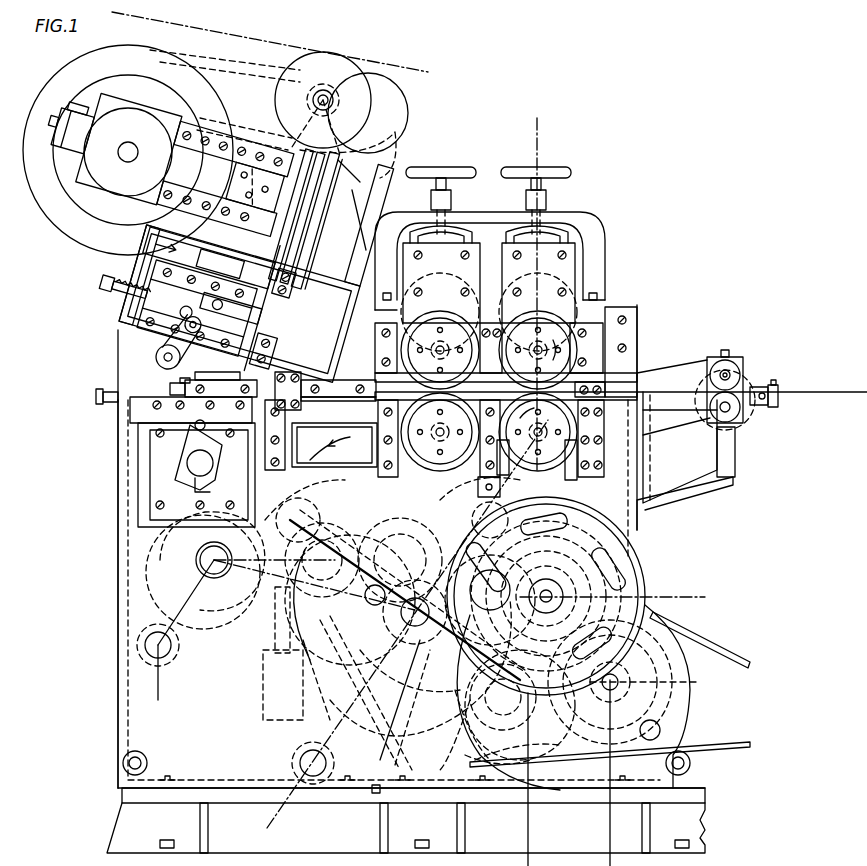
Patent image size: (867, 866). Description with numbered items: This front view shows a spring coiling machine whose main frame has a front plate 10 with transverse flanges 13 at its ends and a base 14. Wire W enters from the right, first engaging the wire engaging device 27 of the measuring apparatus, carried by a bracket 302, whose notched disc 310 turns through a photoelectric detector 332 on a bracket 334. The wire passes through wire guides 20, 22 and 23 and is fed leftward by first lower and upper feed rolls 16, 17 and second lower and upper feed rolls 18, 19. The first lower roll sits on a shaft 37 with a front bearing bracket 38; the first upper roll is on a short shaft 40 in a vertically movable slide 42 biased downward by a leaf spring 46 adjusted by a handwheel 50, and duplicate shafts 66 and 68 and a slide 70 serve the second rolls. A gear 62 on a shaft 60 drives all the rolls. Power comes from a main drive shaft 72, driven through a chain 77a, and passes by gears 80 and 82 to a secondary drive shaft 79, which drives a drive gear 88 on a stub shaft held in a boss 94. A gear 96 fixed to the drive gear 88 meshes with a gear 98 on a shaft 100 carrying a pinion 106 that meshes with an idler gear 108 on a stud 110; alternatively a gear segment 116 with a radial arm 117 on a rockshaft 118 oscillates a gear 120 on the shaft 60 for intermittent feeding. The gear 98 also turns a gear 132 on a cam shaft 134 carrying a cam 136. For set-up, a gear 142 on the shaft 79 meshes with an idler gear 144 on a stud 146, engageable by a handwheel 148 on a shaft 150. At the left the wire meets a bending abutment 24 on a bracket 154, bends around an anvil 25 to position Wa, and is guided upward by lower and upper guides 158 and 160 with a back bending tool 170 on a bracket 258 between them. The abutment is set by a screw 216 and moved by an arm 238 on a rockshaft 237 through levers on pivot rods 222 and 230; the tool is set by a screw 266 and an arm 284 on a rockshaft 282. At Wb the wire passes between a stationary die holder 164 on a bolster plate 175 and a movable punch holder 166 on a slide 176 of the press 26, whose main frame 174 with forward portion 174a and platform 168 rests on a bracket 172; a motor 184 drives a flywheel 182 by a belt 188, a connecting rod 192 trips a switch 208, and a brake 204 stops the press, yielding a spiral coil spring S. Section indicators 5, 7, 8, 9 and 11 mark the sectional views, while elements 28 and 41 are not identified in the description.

The front plate 10 is at (118, 3).
The section line 5- 5 is at (552, 140).
The section line 7- 7 is at (290, 808).
The section line 8- 8 is at (160, 682).
The section line 9- 9 is at (678, 600).
The section line 11- 11 is at (279, 112).
The transverse flanges 13 is at (118, 585).
The base 14 is at (120, 834).
The first lower feed roll 16 is at (565, 439).
The first upper feed roll 17 is at (574, 362).
The second lower feed roll 18 is at (377, 453).
The second upper feed roll 19 is at (402, 358).
The wire guide 20 is at (595, 392).
The wire guide 22 is at (534, 340).
The wire guides 23 is at (345, 382).
The coiling or bending abutment 24 is at (240, 384).
The arbor or anvil 25 is at (280, 380).
The press 26 is at (236, 124).
The wire engaging device 27 is at (708, 368).
The drive gear 28 is at (312, 538).
The shaft 37 is at (538, 432).
The bracket 38 is at (562, 480).
The short shaft 40 is at (538, 331).
The roll housing 41 is at (582, 272).
The vertically movable slide 42 is at (564, 284).
The leaf spring 46 is at (460, 240).
The handwheel 50 is at (458, 174).
The shaft 60 is at (484, 512).
The gear 62 is at (546, 596).
The shaft 66 is at (440, 432).
The shaft 68 is at (440, 331).
The vertically movable slide 70 is at (448, 284).
The main drive shaft 72 is at (613, 684).
The chain 77a is at (733, 652).
The secondary drive shaft 79 is at (520, 705).
The gear 80 is at (690, 684).
The gear 82 is at (465, 764).
The drive gear 88 is at (456, 730).
The boss 94 is at (406, 612).
The gear 96 is at (437, 706).
The gear 98 is at (350, 600).
The shaft 100 is at (400, 560).
The pinion 106 is at (292, 471).
The idler gear 108 is at (334, 445).
The stud 110 is at (445, 497).
The gear segment 116 is at (543, 573).
The radial arm 117 is at (346, 678).
The rockshaft 118 is at (300, 762).
The gear 120 is at (545, 537).
The gear 132 is at (232, 640).
The cam shaft 134 is at (196, 562).
The cam 136 is at (205, 624).
The gear 142 is at (610, 760).
The idler gear 144 is at (548, 540).
The stud 146 is at (490, 600).
The handwheel 148 is at (645, 574).
The shaft 150 is at (560, 595).
The bracket 154 is at (160, 457).
The lower guide 158 is at (282, 352).
The upper guide 160 is at (318, 280).
The stationary tool or die holder 164 is at (310, 210).
The movable tool or punch holder 166 is at (306, 228).
The platform 168 is at (380, 170).
The back bending tool 170 is at (176, 262).
The bracket 172 is at (150, 238).
The main frame of the press 174 is at (176, 120).
The forwardly projecting frame portion 174a is at (365, 236).
The bolster plate 175 is at (355, 182).
The slide or gate 176 is at (257, 187).
The flywheel 182 is at (56, 217).
The electric motor 184 is at (330, 60).
The belt 188 is at (214, 62).
The connecting rod 192 is at (165, 200).
The brake 204 is at (108, 120).
The switch 208 is at (58, 130).
The screw 216 is at (104, 396).
The transverse pivot rod 222 is at (146, 647).
The transverse pivot rod 230 is at (407, 595).
The transverse rockshaft 237 is at (213, 498).
The arm 238 is at (195, 455).
The bracket 258 is at (118, 320).
The screw 266 is at (118, 292).
The transverse rockshaft 282 is at (166, 386).
The arm 284 is at (160, 343).
The bracket 302 is at (666, 438).
The notched disc 310 is at (742, 428).
The photoelectric detector 332 is at (735, 457).
The bracket 334 is at (668, 507).
The coil spring S is at (398, 120).
The wire W is at (793, 394).
The bent wire portion Wa is at (275, 340).
The wire portion at press Wb is at (314, 196).